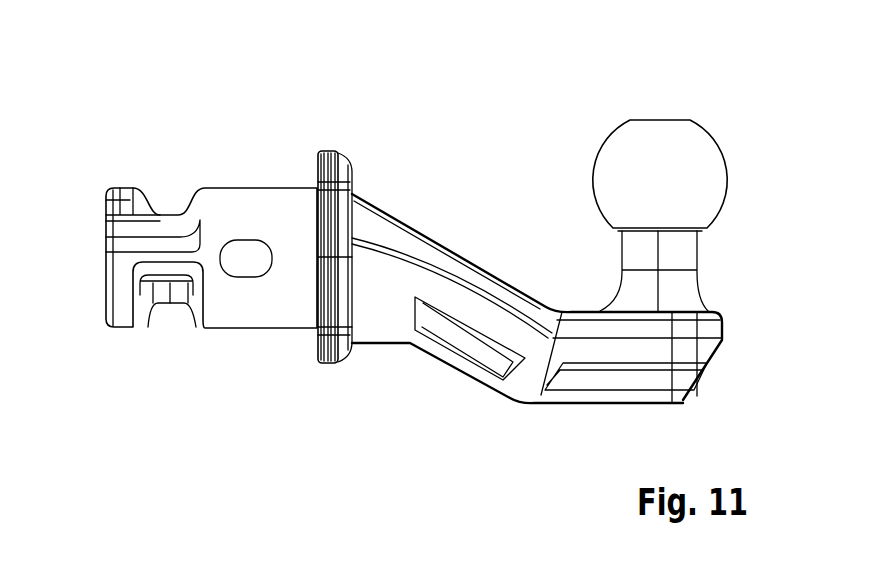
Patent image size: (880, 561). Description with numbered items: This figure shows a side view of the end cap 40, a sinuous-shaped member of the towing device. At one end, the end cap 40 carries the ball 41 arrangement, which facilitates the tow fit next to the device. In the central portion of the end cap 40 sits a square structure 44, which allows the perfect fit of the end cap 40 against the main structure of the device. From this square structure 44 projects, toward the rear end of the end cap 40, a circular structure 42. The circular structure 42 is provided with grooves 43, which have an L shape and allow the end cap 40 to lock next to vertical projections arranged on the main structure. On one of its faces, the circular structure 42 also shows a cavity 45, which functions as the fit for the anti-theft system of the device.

The end cap 40 is at (433, 222).
The ball 41 is at (664, 120).
The circular structure 42 is at (274, 188).
The grooves 43 is at (168, 215).
The square structure 44 is at (333, 363).
The cavity 45 is at (245, 258).